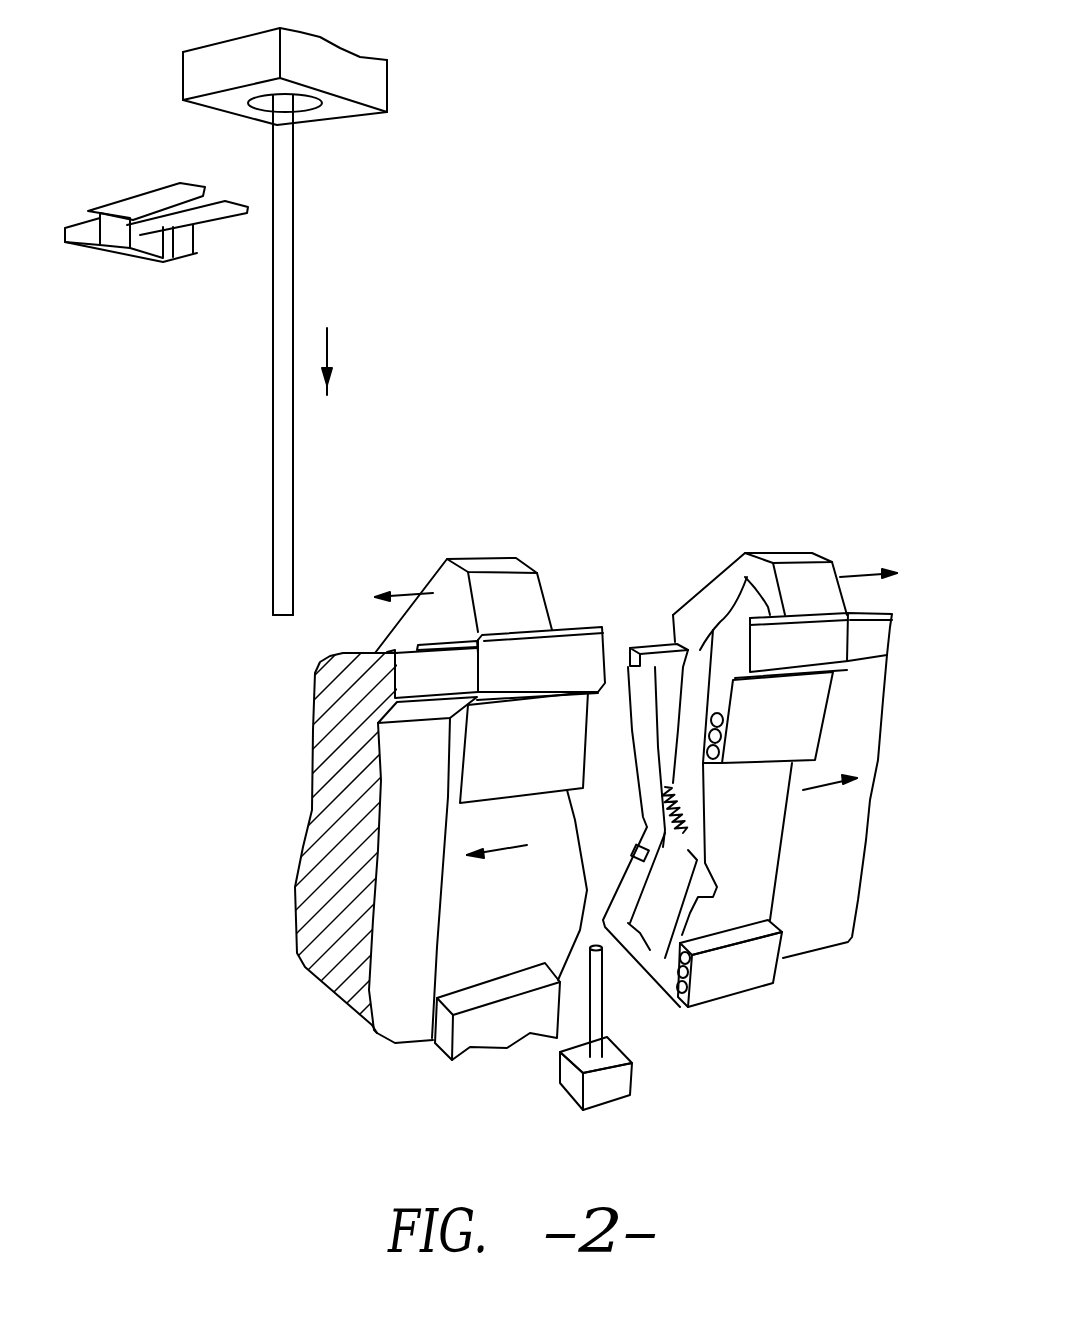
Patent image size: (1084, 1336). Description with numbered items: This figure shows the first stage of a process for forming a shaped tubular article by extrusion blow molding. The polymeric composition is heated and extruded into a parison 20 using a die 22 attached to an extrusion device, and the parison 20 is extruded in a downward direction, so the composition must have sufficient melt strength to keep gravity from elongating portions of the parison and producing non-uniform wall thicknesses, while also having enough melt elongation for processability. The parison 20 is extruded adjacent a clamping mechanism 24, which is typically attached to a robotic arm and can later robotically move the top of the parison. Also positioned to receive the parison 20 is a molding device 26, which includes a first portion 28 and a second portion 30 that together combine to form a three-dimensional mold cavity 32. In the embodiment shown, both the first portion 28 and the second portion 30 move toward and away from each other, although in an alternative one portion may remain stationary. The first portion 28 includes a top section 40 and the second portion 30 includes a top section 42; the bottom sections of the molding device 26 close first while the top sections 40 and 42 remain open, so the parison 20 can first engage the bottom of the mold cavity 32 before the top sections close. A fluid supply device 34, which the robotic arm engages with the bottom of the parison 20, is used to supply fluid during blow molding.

The parison 20 is at (297, 248).
The die 22 is at (370, 80).
The clamping mechanism 24 is at (115, 232).
The molding device 26 is at (448, 734).
The first portion 28 is at (393, 992).
The second portion 30 is at (833, 913).
The mold cavity 32 is at (665, 708).
The fluid supply device 34 is at (623, 1080).
The top section 40 is at (445, 577).
The top section 42 is at (836, 564).